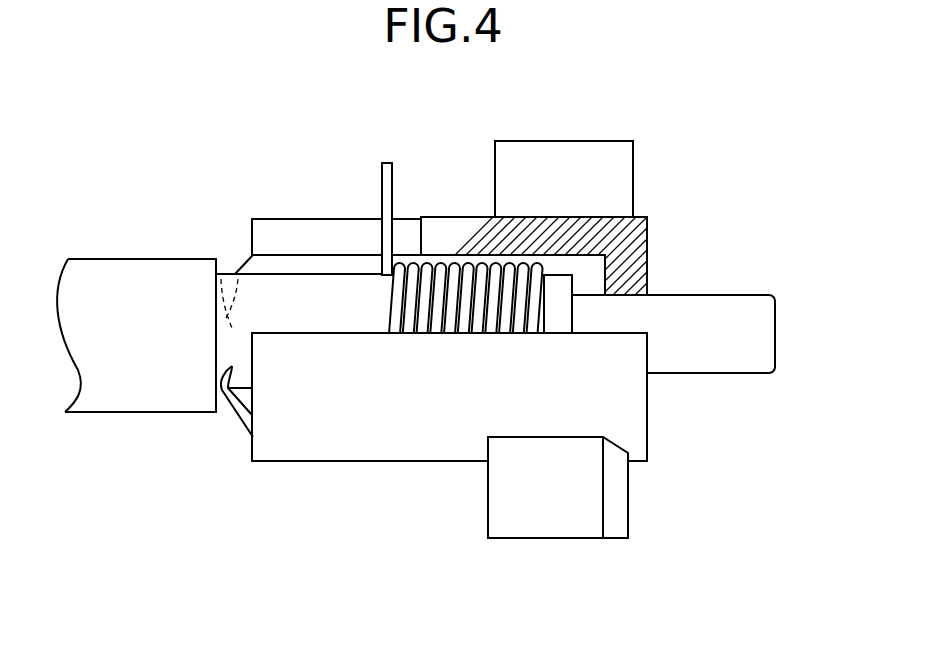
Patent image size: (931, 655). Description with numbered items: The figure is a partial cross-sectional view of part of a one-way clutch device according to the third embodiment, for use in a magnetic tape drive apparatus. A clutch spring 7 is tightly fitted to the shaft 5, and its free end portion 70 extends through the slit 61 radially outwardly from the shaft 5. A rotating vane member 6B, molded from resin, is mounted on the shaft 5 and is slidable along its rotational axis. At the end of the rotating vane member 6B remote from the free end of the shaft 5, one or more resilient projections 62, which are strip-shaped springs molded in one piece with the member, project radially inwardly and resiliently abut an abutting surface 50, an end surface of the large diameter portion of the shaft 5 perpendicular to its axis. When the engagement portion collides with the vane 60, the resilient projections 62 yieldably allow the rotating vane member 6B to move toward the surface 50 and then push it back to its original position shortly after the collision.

The shaft 5 is at (753, 340).
The rotating vane member 6B is at (358, 438).
The clutch spring 7 is at (475, 268).
The abutting surface 50 is at (222, 268).
The vane 60 is at (579, 520).
The slit 61 is at (293, 237).
The resilient projections 62 is at (235, 413).
The free end portion 70 is at (381, 200).